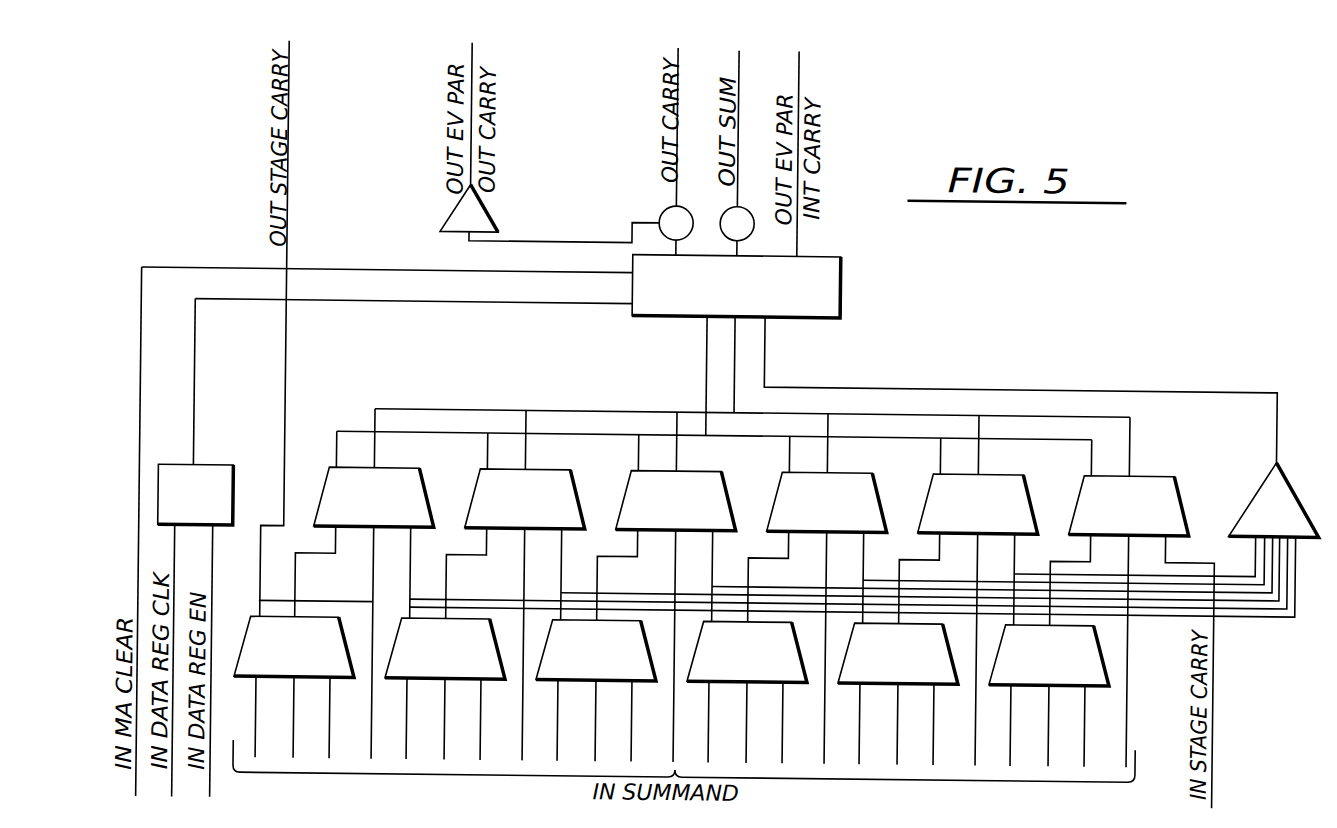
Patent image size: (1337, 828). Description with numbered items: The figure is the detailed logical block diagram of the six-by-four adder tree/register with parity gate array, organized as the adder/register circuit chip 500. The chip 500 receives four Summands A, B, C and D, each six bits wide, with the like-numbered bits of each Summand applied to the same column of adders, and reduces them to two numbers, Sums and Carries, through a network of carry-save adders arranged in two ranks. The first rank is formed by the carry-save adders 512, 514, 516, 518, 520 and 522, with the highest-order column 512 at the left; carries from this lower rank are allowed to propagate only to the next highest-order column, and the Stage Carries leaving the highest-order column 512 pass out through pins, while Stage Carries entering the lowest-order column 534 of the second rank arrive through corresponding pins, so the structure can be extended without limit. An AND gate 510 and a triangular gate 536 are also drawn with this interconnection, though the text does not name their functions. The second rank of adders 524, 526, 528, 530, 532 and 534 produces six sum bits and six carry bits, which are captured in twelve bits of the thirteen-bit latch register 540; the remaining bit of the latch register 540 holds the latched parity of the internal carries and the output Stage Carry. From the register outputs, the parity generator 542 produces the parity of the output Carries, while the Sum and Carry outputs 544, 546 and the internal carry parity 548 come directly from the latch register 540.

The adder/register circuit chip 500 is at (488, 379).
The AND gate 510 is at (228, 471).
The carry-save adder 512 is at (347, 596).
The carry-save adder 514 is at (503, 590).
The carry-save adder 516 is at (620, 621).
The carry-save adder 518 is at (771, 621).
The carry-save adder 520 is at (922, 621).
The carry-save adder 522 is at (1108, 668).
The second rank adder 524 is at (387, 471).
The second rank adder 526 is at (538, 471).
The second rank adder 528 is at (689, 471).
The second rank adder 530 is at (840, 471).
The second rank adder 532 is at (991, 471).
The second rank adder 534 is at (1142, 471).
The stage carry gate 536 is at (1281, 463).
The 13-bit latch register 540 is at (840, 293).
The parity generator 542 is at (497, 223).
The Sum and Carry output 544 is at (673, 196).
The Sum and Carry output 546 is at (734, 196).
The internal carry parity 548 is at (796, 245).